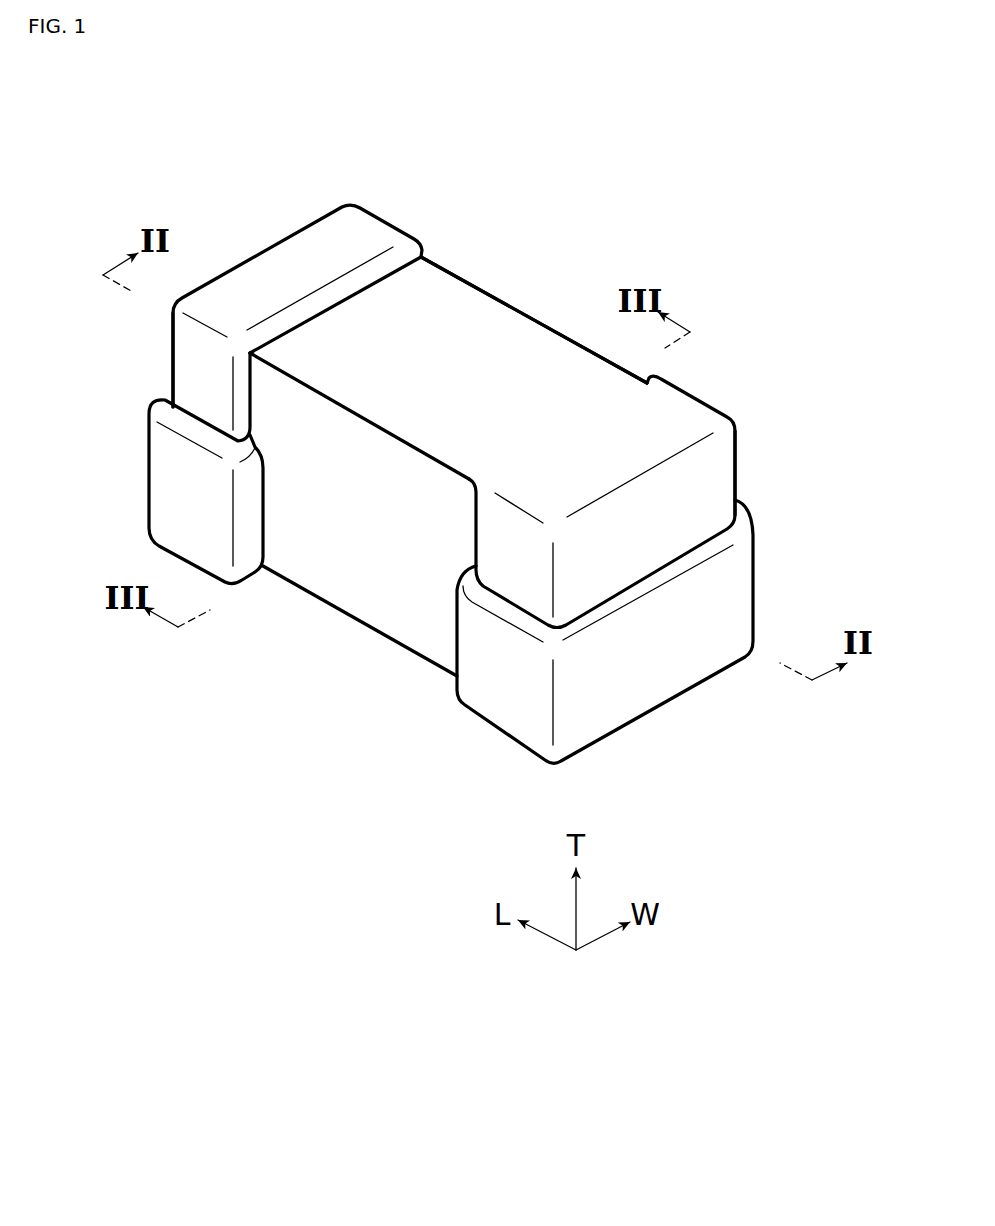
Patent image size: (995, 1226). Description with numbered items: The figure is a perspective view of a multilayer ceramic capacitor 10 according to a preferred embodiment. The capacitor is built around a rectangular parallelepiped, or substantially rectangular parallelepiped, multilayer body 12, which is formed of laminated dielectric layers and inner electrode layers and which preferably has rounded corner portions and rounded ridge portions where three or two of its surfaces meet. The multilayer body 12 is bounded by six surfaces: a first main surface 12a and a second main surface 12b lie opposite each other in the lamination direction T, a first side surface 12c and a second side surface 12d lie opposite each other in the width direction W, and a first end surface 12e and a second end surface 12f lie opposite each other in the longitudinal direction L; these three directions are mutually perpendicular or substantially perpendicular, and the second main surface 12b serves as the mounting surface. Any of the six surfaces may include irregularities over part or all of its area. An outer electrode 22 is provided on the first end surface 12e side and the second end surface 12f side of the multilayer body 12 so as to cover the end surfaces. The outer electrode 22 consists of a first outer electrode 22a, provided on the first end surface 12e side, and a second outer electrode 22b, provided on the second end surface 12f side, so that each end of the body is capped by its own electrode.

The multilayer ceramic capacitor 10 is at (134, 170).
The multilayer body 12 is at (496, 441).
The first main surface 12a is at (472, 312).
The second main surface 12b is at (432, 630).
The first side surface 12c is at (337, 575).
The second side surface 12d is at (557, 362).
The first end surface 12e is at (283, 280).
The second end surface 12f is at (683, 523).
The outer electrode 22 is at (457, 577).
The first outer electrode 22a is at (303, 227).
The second outer electrode 22b is at (680, 695).